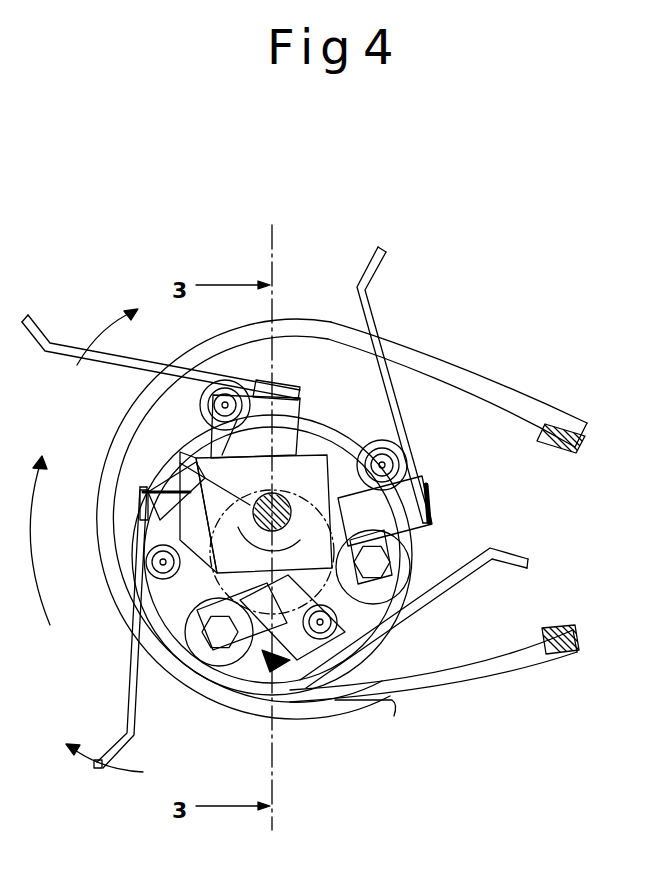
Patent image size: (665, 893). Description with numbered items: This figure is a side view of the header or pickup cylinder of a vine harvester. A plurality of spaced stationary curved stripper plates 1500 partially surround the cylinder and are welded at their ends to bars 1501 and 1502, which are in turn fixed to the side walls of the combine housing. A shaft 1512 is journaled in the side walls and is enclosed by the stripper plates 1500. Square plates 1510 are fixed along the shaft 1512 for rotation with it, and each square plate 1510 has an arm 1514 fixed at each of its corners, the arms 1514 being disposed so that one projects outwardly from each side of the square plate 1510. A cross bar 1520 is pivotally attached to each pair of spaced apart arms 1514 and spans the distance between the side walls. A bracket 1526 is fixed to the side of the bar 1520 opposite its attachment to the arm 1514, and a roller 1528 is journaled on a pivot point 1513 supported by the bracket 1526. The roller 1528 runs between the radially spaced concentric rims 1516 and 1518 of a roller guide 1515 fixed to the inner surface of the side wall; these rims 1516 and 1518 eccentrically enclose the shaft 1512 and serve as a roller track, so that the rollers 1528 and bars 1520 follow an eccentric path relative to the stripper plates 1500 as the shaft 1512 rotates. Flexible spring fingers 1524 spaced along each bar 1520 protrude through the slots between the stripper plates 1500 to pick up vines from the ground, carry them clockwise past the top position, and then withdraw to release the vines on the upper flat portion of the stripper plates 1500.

The stripper plate 1500 is at (398, 708).
The bar 1501 is at (572, 454).
The bar 1502 is at (581, 630).
The square plate 1510 is at (386, 609).
The shaft 1512 is at (150, 484).
The pivot point 1513 is at (440, 537).
The arm 1514 is at (347, 462).
The roller guide 1515 is at (200, 590).
The rim 1516 is at (180, 625).
The rim 1518 is at (445, 565).
The cross bar 1520 is at (322, 668).
The flexible spring finger 1524 is at (45, 330).
The bracket 1526 is at (408, 490).
The roller 1528 is at (185, 642).